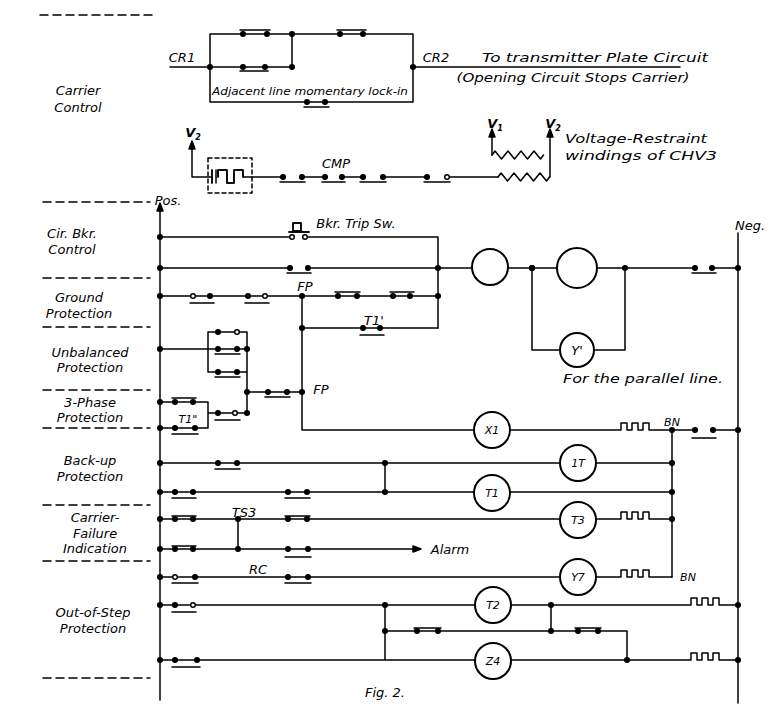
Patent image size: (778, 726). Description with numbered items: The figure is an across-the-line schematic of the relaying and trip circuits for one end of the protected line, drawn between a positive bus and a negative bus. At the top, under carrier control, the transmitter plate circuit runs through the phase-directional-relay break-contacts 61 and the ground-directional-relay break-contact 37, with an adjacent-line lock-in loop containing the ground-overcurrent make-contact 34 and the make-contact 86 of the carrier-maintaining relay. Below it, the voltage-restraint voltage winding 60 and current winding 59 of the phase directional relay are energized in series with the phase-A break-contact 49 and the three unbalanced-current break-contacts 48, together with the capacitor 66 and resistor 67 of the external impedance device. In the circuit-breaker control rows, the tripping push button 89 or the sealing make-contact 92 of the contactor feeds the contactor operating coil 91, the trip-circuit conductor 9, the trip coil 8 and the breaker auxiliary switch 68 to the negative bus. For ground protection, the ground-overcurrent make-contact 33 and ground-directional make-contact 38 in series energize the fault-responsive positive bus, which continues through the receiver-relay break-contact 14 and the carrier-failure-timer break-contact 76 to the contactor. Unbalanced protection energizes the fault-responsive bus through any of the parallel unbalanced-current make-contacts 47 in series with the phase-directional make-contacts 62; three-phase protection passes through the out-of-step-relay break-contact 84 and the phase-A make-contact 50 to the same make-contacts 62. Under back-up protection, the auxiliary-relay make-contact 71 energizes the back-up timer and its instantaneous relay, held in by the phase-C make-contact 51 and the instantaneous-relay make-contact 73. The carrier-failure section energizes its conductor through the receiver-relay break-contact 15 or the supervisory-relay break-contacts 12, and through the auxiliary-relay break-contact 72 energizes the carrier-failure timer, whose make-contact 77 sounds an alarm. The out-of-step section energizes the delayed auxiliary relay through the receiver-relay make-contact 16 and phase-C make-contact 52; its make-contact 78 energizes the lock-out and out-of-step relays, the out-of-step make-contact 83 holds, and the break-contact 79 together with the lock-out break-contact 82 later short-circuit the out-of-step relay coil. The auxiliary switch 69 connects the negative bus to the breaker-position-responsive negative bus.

The make-contact 34 is at (244, 64).
The break-contacts 61 is at (261, 37).
The break-contact 37 is at (350, 37).
The make-contact 86 is at (327, 104).
The capacitor 66 is at (216, 169).
The resistor 67 is at (242, 169).
The break-contact 48 is at (288, 176).
The break-contact 49 is at (427, 176).
The current-winding 59 is at (515, 152).
The voltage-winding 60 is at (522, 181).
The tripping push button 89 is at (290, 236).
The make-contact 92 is at (309, 268).
The operating coil 91 is at (489, 285).
The trip-circuit conductor 9 is at (532, 258).
The trip coil 8 is at (590, 284).
The auxiliary switch 68 is at (706, 276).
The make-contact 33 is at (204, 305).
The make-contact 38 is at (259, 305).
The break-contact 14 is at (355, 298).
The break-contact 76 is at (409, 298).
The make-contact 47 is at (240, 370).
The break-contact 84 is at (172, 399).
The make-contact 50 is at (231, 422).
The make-contacts 62 is at (276, 399).
The make-contact 71 is at (240, 466).
The make-contact 51 is at (196, 497).
The make-contact 73 is at (310, 494).
The break-contact 72 is at (311, 521).
The break-contact 15 is at (195, 522).
The break-contacts 12 is at (196, 553).
The make-contact 77 is at (310, 547).
The make-contact 16 is at (197, 578).
The make-contact 52 is at (312, 584).
The make-contact 78 is at (198, 613).
The break-contact 79 is at (427, 634).
The break-contact 82 is at (586, 634).
The make-contact 83 is at (190, 670).
The auxiliary switch 69 is at (707, 440).